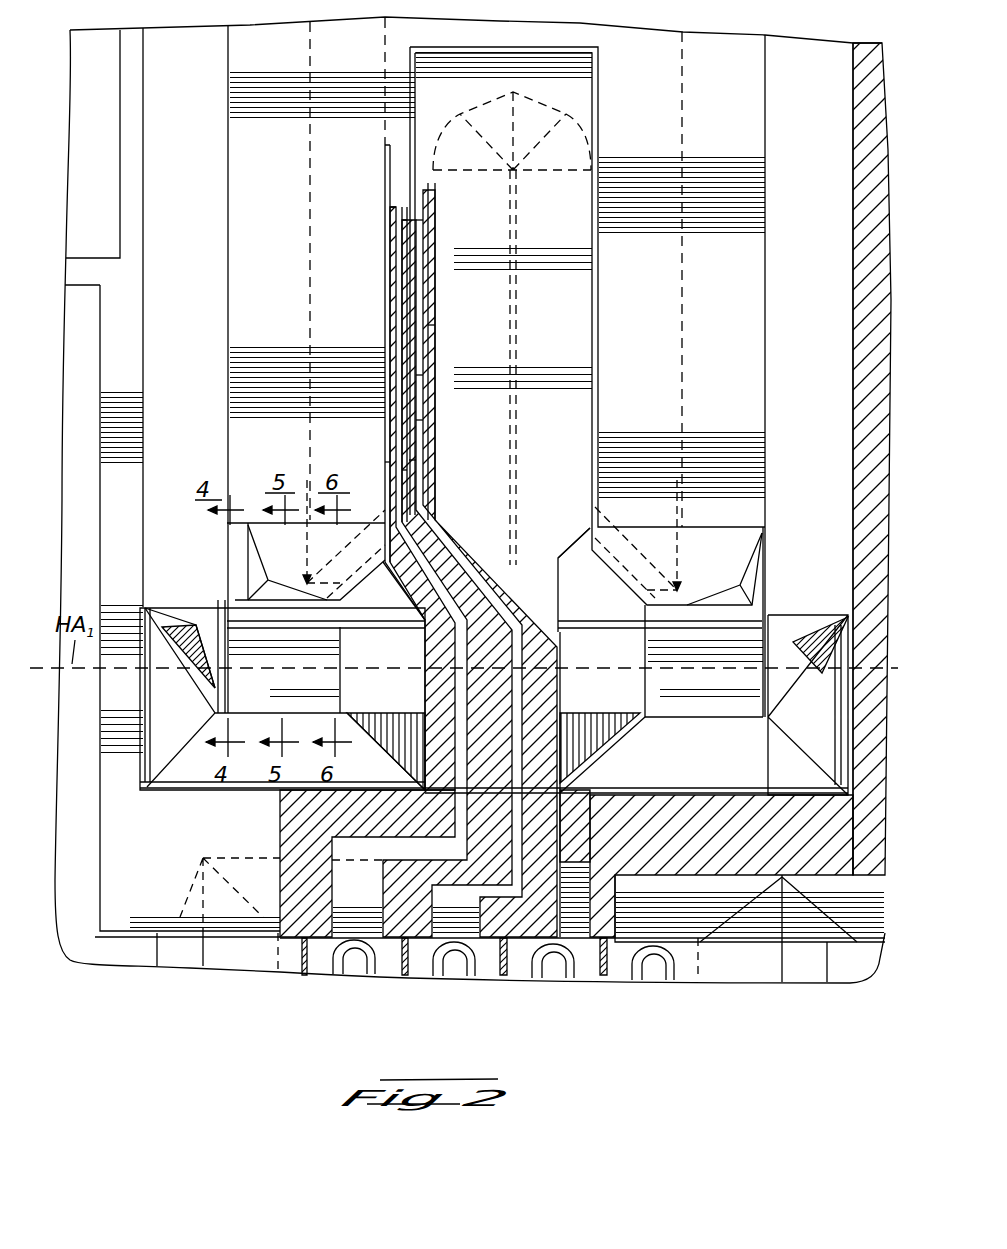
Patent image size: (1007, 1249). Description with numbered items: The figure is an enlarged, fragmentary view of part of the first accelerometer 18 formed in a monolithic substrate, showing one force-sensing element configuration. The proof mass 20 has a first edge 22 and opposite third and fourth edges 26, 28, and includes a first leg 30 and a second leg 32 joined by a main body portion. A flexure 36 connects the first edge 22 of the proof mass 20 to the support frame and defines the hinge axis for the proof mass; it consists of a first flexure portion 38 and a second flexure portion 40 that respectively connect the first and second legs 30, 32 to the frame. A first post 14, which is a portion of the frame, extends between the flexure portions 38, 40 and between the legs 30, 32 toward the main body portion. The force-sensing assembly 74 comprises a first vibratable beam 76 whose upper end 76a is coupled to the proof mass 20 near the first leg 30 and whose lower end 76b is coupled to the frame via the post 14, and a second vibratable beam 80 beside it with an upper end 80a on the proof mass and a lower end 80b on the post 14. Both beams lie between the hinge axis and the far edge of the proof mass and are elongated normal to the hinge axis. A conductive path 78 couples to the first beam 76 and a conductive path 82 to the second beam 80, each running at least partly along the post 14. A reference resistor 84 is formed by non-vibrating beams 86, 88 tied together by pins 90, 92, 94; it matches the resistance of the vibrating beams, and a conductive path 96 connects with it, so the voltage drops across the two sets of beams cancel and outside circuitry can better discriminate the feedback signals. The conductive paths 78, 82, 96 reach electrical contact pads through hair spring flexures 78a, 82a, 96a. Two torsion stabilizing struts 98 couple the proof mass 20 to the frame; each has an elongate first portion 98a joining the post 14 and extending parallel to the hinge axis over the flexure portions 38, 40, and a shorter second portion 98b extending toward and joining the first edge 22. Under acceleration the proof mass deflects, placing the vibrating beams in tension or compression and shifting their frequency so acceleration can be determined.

The first post 14 is at (598, 112).
The first accelerometer 18 is at (797, 254).
The proof mass 20 is at (767, 92).
The first edge 22 is at (308, 605).
The third edge 26 is at (228, 152).
The fourth edge 28 is at (768, 380).
The first leg 30 is at (262, 200).
The second leg 32 is at (722, 352).
The flexure 36 is at (258, 727).
The first flexure portion 38 is at (250, 678).
The second flexure portion 40 is at (740, 660).
The force-sensing assembly 74 is at (347, 251).
The first vibratable beam 76 is at (392, 270).
The upper end of first beam 76a is at (392, 217).
The lower end of first beam 76b is at (387, 466).
The conductive path 78 is at (302, 828).
The hair spring flexure 78a is at (305, 976).
The second vibratable beam 80 is at (404, 305).
The upper end of second beam 80a is at (404, 222).
The lower end of second beam 80b is at (420, 472).
The conductive path 82 is at (410, 877).
The hair spring flexure 82a is at (400, 976).
The reference resistor 84 is at (431, 340).
The reference beam 86 is at (432, 420).
The reference beam 88 is at (416, 460).
The pin 90 is at (434, 292).
The pin 92 is at (428, 325).
The pin 94 is at (423, 375).
The conductive path 96 is at (545, 742).
The hair spring flexure 96a is at (497, 976).
The torsion stabilizing strut 98 is at (356, 629).
The first portion of strut 98a is at (370, 622).
The second portion of strut 98b is at (268, 600).